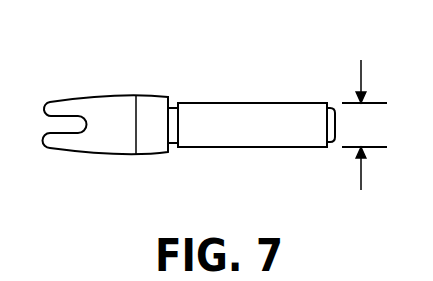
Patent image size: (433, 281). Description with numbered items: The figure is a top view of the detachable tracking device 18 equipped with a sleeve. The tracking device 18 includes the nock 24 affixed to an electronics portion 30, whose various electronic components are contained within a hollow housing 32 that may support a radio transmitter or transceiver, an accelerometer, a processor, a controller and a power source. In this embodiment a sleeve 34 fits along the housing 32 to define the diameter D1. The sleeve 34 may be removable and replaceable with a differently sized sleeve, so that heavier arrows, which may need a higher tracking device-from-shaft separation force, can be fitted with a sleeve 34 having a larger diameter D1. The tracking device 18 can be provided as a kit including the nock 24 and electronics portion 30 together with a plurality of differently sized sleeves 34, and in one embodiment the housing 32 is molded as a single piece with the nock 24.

The nock 24 is at (95, 105).
The tracking device 18 is at (163, 98).
The electronics portion 30 is at (227, 103).
The sleeve 34 is at (249, 138).
The housing 32 is at (333, 142).
The diameter D1 is at (364, 106).